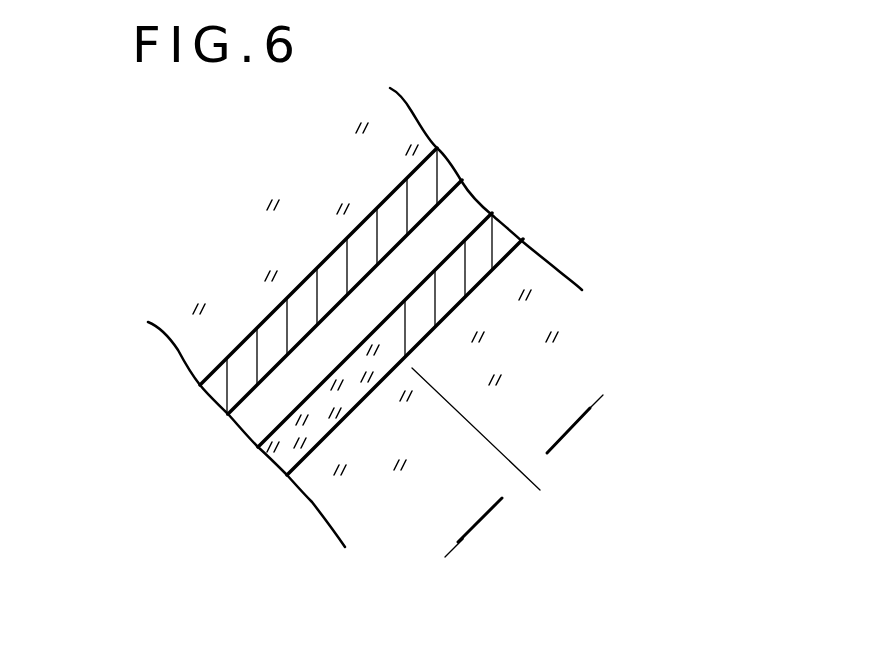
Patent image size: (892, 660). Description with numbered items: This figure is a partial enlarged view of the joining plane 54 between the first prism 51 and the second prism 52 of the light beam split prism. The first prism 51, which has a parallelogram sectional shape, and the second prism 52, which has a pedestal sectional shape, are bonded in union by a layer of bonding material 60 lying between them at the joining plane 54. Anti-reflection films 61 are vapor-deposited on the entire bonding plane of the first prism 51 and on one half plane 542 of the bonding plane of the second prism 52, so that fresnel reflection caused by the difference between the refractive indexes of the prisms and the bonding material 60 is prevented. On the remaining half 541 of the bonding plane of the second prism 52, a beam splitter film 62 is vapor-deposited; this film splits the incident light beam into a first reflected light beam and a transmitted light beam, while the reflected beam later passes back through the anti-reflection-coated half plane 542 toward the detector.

The first prism 51 is at (193, 353).
The second prism 52 is at (325, 497).
The joining plane 54 is at (255, 481).
The remaining half of the bonding plane 541 is at (483, 533).
The half plane of the bonding plane 542 is at (587, 428).
The bonding material 60 is at (478, 210).
The hatched layer 61 is at (447, 177).
The beam splitter film 62 is at (282, 460).